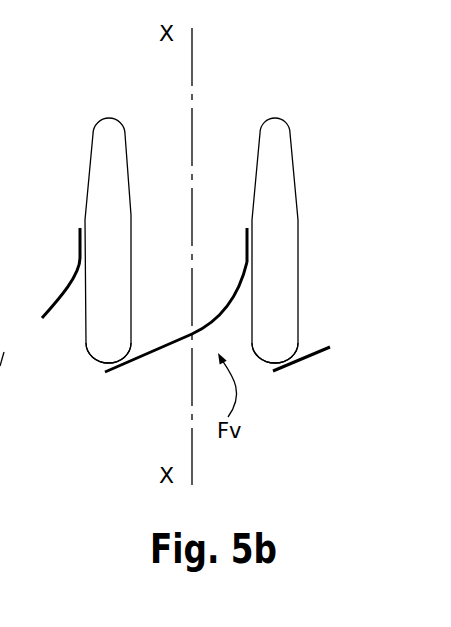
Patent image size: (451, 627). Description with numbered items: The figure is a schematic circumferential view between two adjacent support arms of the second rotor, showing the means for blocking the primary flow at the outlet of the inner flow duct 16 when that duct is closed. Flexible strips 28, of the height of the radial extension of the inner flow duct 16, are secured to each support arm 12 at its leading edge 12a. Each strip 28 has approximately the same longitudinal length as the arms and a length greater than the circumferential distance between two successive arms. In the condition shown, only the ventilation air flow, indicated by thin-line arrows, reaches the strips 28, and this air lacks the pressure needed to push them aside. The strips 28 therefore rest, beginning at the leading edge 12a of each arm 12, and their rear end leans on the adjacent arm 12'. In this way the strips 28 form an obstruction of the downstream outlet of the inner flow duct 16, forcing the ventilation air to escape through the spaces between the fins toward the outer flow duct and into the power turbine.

The support arm 12 is at (106, 212).
The adjacent support arm 12' is at (284, 206).
The leading edge 12a is at (108, 363).
The inner flow duct 16 is at (157, 381).
The flexible strip 28 is at (64, 288).